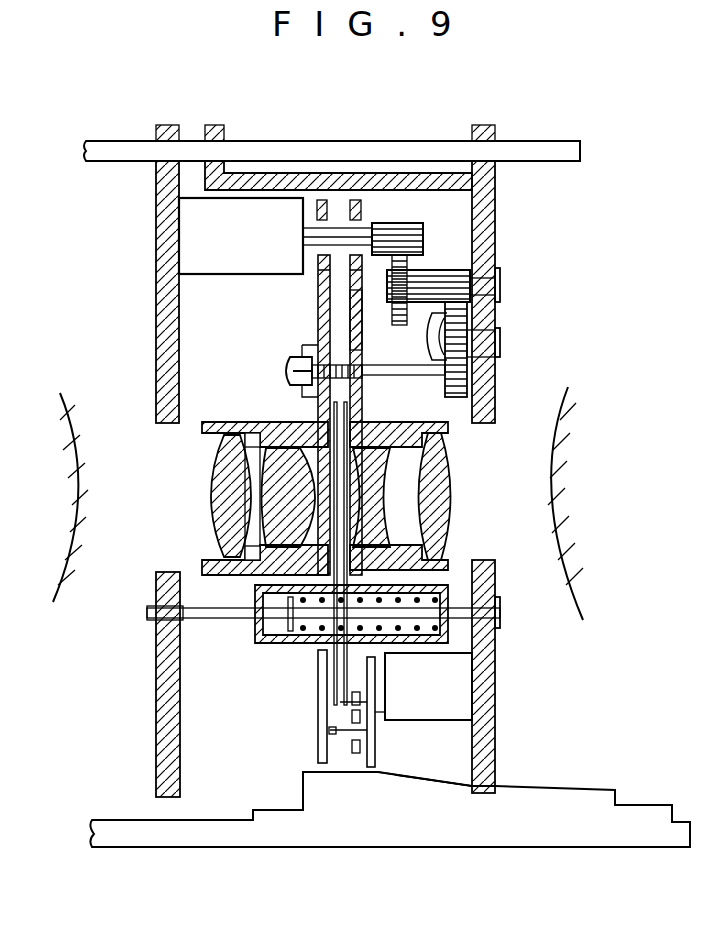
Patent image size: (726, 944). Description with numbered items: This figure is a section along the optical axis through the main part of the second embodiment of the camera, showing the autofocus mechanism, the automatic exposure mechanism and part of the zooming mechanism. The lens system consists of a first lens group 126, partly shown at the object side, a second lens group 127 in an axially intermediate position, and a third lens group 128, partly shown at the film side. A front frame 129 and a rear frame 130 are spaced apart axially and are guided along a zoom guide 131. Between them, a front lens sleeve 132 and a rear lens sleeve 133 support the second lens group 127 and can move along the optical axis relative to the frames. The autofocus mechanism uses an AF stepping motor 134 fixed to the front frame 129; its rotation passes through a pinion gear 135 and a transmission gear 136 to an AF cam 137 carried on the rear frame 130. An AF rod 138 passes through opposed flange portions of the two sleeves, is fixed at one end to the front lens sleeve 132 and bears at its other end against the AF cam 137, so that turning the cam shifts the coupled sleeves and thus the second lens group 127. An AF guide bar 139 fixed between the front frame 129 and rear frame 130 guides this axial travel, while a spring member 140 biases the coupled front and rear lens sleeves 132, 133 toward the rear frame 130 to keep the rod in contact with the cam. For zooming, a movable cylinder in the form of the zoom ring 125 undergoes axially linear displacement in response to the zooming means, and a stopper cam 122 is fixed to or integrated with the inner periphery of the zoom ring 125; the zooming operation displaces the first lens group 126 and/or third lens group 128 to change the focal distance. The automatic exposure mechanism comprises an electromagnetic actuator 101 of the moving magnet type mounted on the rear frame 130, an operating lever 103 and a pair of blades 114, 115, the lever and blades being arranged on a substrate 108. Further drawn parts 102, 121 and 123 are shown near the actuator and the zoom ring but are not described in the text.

The electromagnetic actuator 101 is at (455, 691).
The plate member 102 is at (380, 713).
The operating lever 103 is at (362, 746).
The substrate 108 is at (353, 745).
The blade 114 is at (340, 676).
The blade 115 is at (342, 690).
The base plate 121 is at (379, 772).
The stopper cam 122 is at (382, 793).
The inclined surface 123 is at (410, 775).
The zoom ring 125 is at (463, 825).
The first lens group 126 is at (39, 572).
The second lens group 127 is at (459, 488).
The third lens group 128 is at (589, 595).
The front frame 129 is at (156, 244).
The rear frame 130 is at (486, 217).
The zoom guide 131 is at (520, 140).
The front lens sleeve 132 is at (318, 316).
The rear lens sleeve 133 is at (358, 338).
The AF stepping motor 134 is at (223, 252).
The pinion gear 135 is at (397, 222).
The transmission gear 136 is at (432, 270).
The AF cam 137 is at (496, 308).
The AF rod 138 is at (290, 370).
The AF guide bar 139 is at (205, 620).
The spring member 140 is at (303, 645).